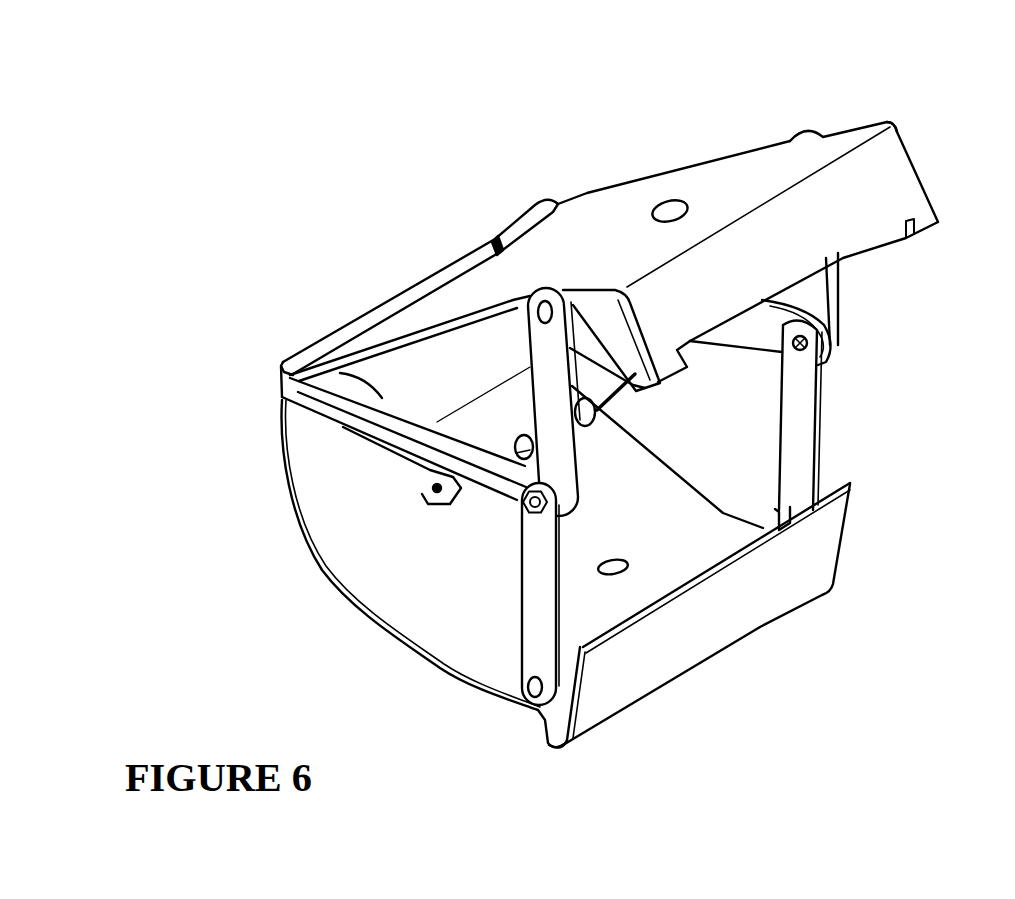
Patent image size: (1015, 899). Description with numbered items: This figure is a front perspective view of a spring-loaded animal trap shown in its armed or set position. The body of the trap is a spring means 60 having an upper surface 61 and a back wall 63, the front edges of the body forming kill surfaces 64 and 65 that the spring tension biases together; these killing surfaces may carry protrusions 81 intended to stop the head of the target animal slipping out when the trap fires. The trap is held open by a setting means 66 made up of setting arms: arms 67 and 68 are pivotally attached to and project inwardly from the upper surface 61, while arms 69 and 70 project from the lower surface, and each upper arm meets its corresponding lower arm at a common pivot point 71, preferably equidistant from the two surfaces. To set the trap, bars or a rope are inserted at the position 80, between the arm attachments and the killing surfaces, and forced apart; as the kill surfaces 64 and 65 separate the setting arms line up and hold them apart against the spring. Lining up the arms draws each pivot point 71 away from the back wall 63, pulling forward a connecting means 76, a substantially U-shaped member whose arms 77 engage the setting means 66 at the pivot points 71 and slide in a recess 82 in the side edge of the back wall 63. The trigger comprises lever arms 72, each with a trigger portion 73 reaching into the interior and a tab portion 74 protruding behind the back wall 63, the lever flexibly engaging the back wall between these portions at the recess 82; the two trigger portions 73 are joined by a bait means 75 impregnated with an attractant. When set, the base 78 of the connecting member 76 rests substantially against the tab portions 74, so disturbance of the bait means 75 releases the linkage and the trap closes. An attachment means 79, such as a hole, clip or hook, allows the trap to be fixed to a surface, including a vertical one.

The spring means 60 is at (892, 107).
The upper surface 61 is at (743, 170).
The back wall 63 is at (300, 478).
The kill surface 64 is at (867, 243).
The kill surface 65 is at (852, 493).
The setting means 66 is at (789, 415).
The setting arm 67 is at (520, 510).
The setting arm 68 is at (818, 295).
The setting arm 69 is at (530, 643).
The setting arm 70 is at (803, 403).
The pivot point 71 is at (517, 540).
The lever arm 72 is at (421, 516).
The trigger portion 73 is at (412, 473).
The tab portion 74 is at (337, 329).
The bait means 75 is at (583, 422).
The connecting means 76 is at (415, 445).
The arm 77 is at (368, 418).
The base 78 is at (317, 342).
The attachment means 79 is at (677, 203).
The position 80 is at (612, 314).
The protrusions 81 is at (923, 218).
The recess 82 is at (260, 399).